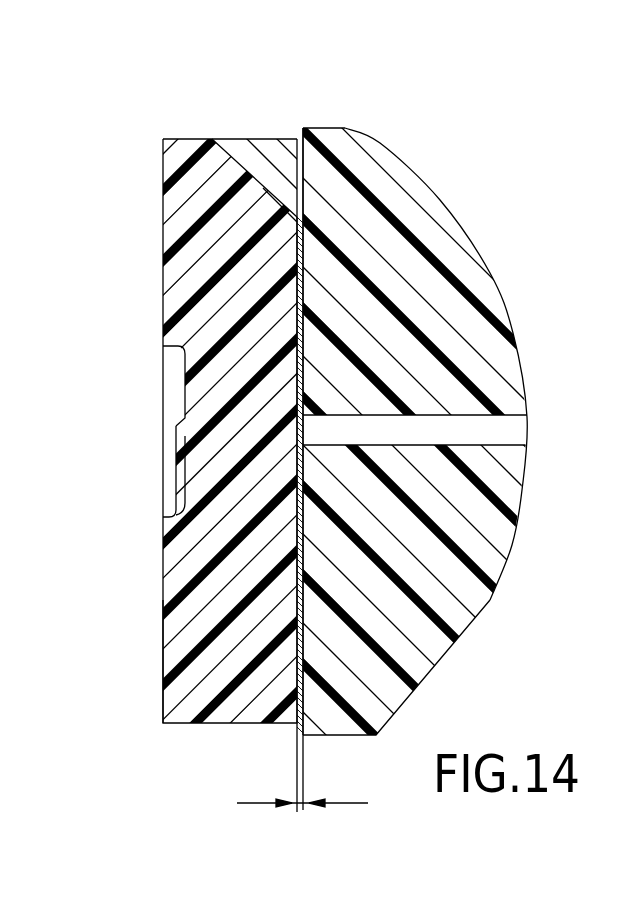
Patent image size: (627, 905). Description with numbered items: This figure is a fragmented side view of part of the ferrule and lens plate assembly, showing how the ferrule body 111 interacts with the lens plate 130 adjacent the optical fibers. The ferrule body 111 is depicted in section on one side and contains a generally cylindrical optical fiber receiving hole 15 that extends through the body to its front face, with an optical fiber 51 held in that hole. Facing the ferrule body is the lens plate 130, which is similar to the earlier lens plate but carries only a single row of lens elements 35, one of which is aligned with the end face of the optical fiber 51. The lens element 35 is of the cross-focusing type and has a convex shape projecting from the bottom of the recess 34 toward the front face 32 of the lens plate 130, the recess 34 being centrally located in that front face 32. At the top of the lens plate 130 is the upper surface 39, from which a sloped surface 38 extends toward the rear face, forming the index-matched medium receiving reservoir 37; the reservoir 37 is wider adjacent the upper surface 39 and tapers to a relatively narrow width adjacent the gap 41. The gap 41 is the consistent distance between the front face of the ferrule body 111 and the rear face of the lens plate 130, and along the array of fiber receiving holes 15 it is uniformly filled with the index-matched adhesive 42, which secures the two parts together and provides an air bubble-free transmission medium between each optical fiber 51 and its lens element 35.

The lens plate 130 is at (175, 200).
The upper surface 39 is at (197, 138).
The index-matched medium receiving reservoir 37 is at (238, 157).
The sloped surface 38 is at (263, 188).
The lens element 35 is at (176, 418).
The recess 34 is at (172, 482).
The front face 32 is at (167, 680).
The ferrule body 111 is at (430, 205).
The optical fiber receiving hole 15 is at (528, 413).
The optical fiber 51 is at (497, 436).
The index-matched adhesive 42 is at (303, 662).
The gap 41 is at (297, 812).